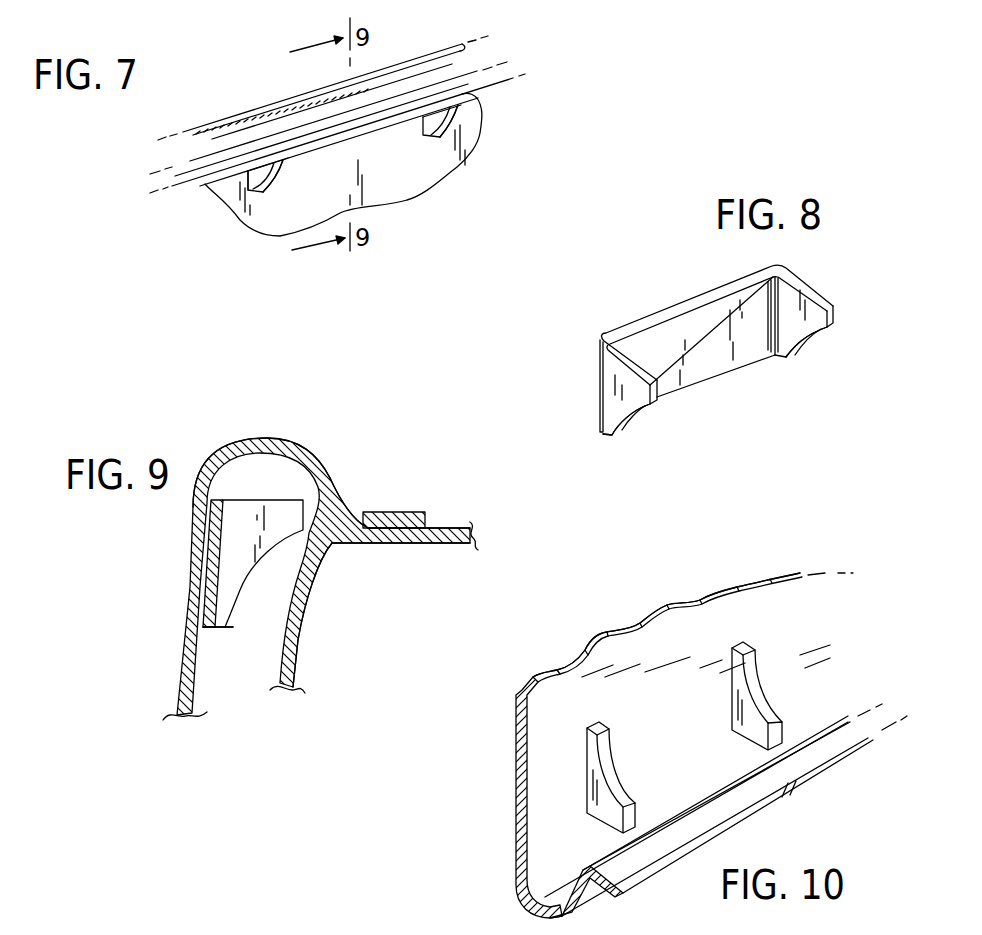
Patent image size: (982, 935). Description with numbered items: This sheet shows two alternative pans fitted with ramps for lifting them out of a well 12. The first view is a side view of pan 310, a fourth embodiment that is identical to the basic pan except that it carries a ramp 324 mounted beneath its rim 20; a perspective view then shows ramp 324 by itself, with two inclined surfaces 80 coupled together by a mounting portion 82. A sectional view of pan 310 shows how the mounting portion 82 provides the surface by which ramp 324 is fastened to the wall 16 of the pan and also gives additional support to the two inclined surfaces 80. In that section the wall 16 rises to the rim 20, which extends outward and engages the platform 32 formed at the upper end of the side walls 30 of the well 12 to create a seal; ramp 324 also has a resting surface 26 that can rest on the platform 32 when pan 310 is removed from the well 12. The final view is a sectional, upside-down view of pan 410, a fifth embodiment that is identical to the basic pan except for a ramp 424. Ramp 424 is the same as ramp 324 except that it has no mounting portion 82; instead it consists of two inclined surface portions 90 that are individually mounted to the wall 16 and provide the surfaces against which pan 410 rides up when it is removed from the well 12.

In FIG. 9, the well 12 is at (323, 547).
In FIG. 9, the wall 16 is at (190, 613).
In FIG. 10, the wall 16 is at (516, 739).
In FIG. 7, the rim 20 is at (462, 44).
In FIG. 9, the rim 20 is at (380, 512).
In FIG. 9, the resting surface 26 is at (223, 628).
In FIG. 9, the side walls 30 is at (300, 653).
In FIG. 9, the platform 32 is at (427, 544).
In FIG. 7, the inclined surfaces 80 is at (252, 176).
In FIG. 8, the inclined surfaces 80 is at (800, 340).
In FIG. 7, the mounting portion 82 is at (298, 165).
In FIG. 8, the mounting portion 82 is at (723, 367).
In FIG. 9, the mounting portion 82 is at (198, 583).
In FIG. 10, the inclined surface portions 90 is at (608, 775).
In FIG. 7, the pan 310 is at (225, 79).
In FIG. 9, the pan 310 is at (233, 450).
In FIG. 7, the ramp 324 is at (385, 137).
In FIG. 8, the ramp 324 is at (667, 293).
In FIG. 9, the ramp 324 is at (263, 500).
In FIG. 10, the pan 410 is at (516, 787).
In FIG. 10, the ramp 424 is at (834, 607).